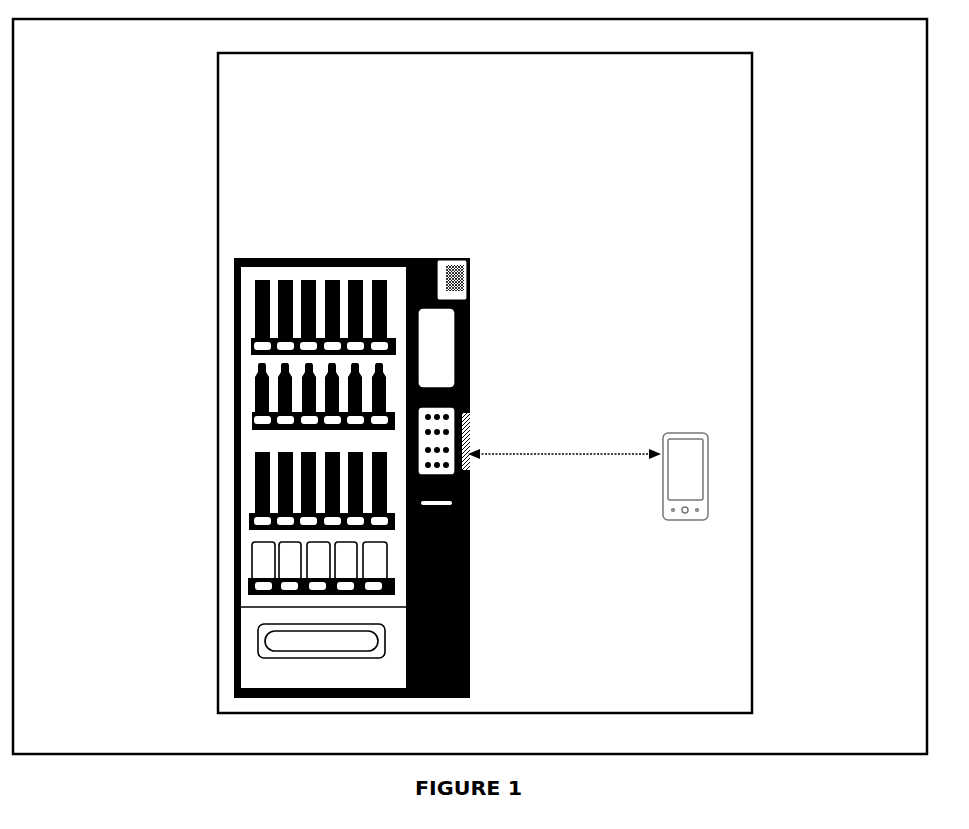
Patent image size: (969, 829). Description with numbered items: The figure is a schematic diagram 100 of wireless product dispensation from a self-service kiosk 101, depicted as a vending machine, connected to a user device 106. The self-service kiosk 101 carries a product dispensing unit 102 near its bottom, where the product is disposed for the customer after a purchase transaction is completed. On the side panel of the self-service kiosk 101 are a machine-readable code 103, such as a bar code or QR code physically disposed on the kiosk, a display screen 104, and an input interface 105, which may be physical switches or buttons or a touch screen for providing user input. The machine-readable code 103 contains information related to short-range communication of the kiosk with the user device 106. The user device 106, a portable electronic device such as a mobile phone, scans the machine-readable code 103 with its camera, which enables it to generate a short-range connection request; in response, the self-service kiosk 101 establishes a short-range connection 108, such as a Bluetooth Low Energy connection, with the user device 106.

The schematic diagram 100 is at (232, 120).
The self-service kiosk 101 is at (224, 326).
The product dispensing unit 102 is at (247, 636).
The machine-readable code 103 is at (459, 250).
The display screen 104 is at (444, 343).
The input interface 105 is at (470, 478).
The user device 106 is at (728, 478).
The short-range connection 108 is at (564, 441).